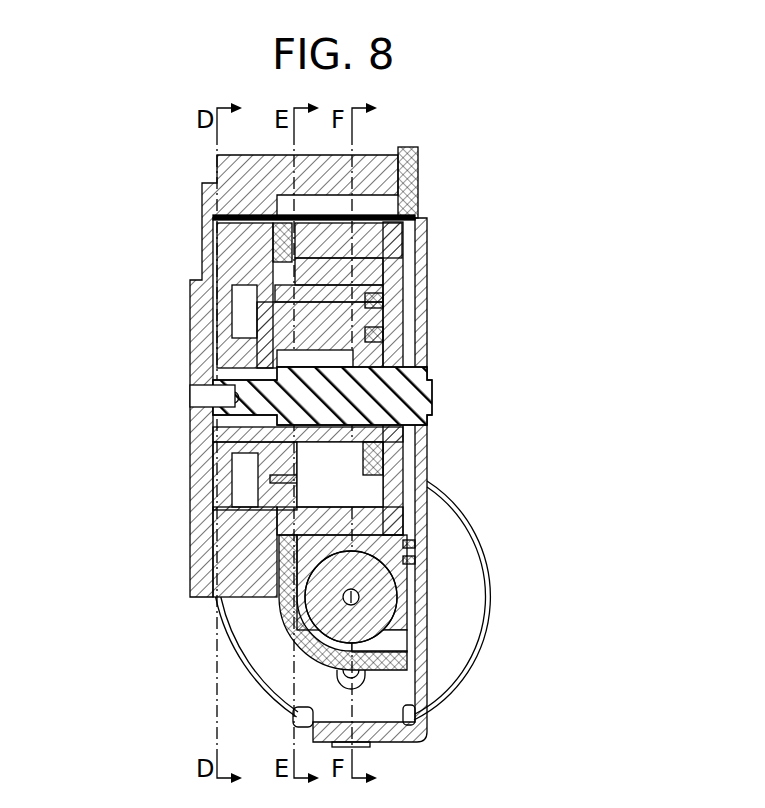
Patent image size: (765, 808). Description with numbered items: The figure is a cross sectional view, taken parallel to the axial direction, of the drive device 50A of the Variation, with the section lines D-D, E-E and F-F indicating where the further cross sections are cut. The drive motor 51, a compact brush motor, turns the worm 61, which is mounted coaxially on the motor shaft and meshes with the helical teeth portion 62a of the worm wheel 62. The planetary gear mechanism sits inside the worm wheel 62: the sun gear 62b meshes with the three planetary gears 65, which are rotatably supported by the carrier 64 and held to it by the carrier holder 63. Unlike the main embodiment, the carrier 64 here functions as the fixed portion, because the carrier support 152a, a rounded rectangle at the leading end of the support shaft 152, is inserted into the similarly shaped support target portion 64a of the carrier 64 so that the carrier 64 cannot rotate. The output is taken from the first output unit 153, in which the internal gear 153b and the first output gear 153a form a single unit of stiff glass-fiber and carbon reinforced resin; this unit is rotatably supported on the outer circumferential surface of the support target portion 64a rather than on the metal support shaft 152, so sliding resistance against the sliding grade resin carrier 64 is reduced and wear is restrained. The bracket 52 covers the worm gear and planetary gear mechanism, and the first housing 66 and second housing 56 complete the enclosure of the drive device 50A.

The drive device 50A is at (541, 186).
The drive motor 51 is at (456, 690).
The bracket 52 is at (428, 297).
The second housing 56 is at (233, 163).
The worm 61 is at (398, 607).
The worm wheel 62 is at (430, 582).
The helical teeth portion 62a is at (463, 540).
The sun gear 62b is at (398, 482).
The carrier holder 63 is at (380, 454).
The carrier 64 is at (290, 312).
The support target portion 64a is at (240, 444).
The planetary gears 65 is at (380, 266).
The first housing 66 is at (382, 207).
The support shaft 152 is at (387, 380).
The carrier support 152a is at (240, 374).
The first output unit 153 is at (243, 281).
The first output gear 153a is at (242, 217).
The internal gear 153b is at (287, 291).